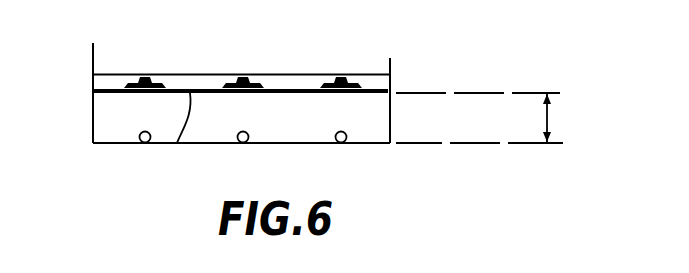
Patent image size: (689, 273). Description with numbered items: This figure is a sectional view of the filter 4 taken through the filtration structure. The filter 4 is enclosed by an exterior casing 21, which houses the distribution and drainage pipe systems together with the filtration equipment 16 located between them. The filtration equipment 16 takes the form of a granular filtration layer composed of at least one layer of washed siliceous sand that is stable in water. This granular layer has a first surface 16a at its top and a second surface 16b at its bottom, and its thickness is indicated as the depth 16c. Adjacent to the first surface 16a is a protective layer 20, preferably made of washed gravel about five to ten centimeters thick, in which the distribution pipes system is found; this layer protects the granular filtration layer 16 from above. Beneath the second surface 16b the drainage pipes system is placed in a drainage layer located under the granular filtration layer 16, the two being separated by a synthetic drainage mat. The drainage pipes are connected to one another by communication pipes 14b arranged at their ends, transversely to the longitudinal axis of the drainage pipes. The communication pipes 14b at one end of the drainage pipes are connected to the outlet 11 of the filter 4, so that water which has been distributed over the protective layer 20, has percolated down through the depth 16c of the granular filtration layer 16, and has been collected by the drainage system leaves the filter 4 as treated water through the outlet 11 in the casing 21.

The filter 4 is at (84, 125).
The outlet 11 is at (643, 18).
The communication pipes 14b is at (342, 65).
The filtration equipment 16 is at (133, 128).
The first surface 16a is at (177, 143).
The second surface 16b is at (159, 145).
The depth 16c is at (575, 118).
The protective layer 20 is at (395, 80).
The exterior casing 21 is at (88, 56).